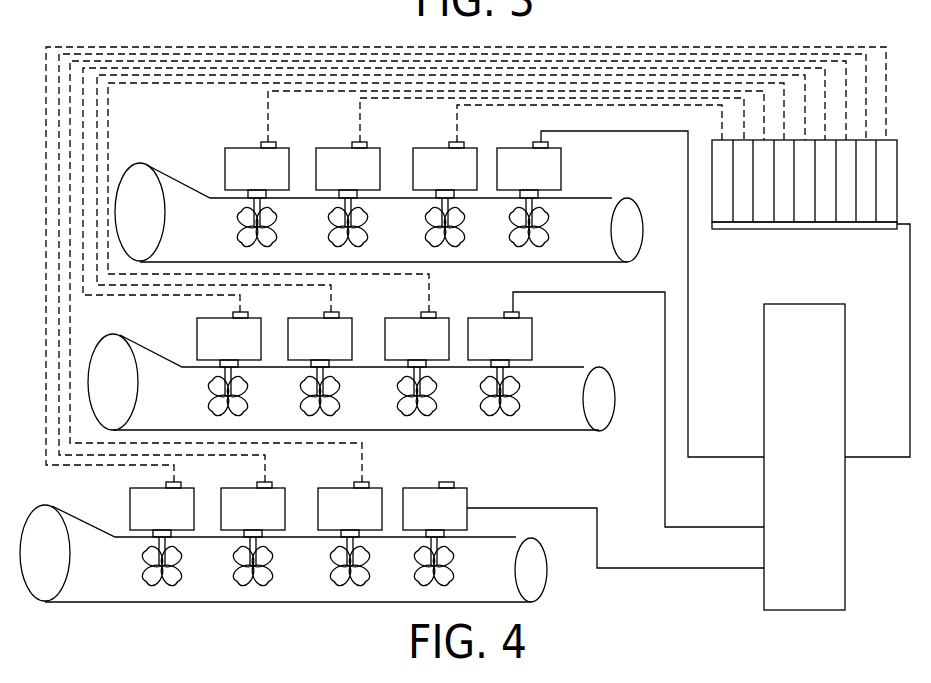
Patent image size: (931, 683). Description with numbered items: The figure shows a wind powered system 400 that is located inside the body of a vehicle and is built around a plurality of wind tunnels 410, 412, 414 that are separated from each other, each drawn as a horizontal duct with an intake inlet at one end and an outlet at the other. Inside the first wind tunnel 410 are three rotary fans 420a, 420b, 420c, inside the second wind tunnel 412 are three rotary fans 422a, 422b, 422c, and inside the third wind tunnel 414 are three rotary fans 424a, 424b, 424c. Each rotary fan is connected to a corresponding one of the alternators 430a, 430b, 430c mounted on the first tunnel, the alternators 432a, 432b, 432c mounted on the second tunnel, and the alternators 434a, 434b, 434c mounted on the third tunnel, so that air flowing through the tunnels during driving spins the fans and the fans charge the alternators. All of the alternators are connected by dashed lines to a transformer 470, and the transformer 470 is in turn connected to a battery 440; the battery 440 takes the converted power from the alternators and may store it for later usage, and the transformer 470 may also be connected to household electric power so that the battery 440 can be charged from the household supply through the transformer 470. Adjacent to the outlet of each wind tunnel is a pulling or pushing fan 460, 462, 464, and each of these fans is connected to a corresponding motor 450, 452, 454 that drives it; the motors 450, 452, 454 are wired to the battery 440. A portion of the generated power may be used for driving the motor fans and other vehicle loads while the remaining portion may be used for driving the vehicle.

The wind powered system 400 is at (90, 25).
The wind tunnel 410 is at (172, 176).
The wind tunnel 412 is at (137, 340).
The wind tunnel 414 is at (65, 508).
The rotary fan 420a is at (236, 218).
The rotary fan 420b is at (324, 218).
The rotary fan 420c is at (420, 218).
The rotary fan 422a is at (206, 386).
The rotary fan 422b is at (298, 387).
The rotary fan 422c is at (394, 387).
The rotary fan 424a is at (140, 556).
The rotary fan 424b is at (232, 557).
The rotary fan 424c is at (328, 557).
The alternator 430a is at (246, 148).
The alternator 430b is at (336, 148).
The alternator 430c is at (430, 148).
The alternator 432a is at (197, 340).
The alternator 432b is at (293, 318).
The alternator 432c is at (390, 318).
The alternator 434a is at (130, 513).
The alternator 434b is at (221, 497).
The alternator 434c is at (318, 498).
The battery 440 is at (801, 304).
The motor 450 is at (515, 148).
The motor 452 is at (502, 318).
The motor 454 is at (428, 488).
The pulling or pushing fan 460 is at (556, 216).
The pulling or pushing fan 462 is at (478, 387).
The pulling or pushing fan 464 is at (412, 557).
The transformer 470 is at (896, 138).